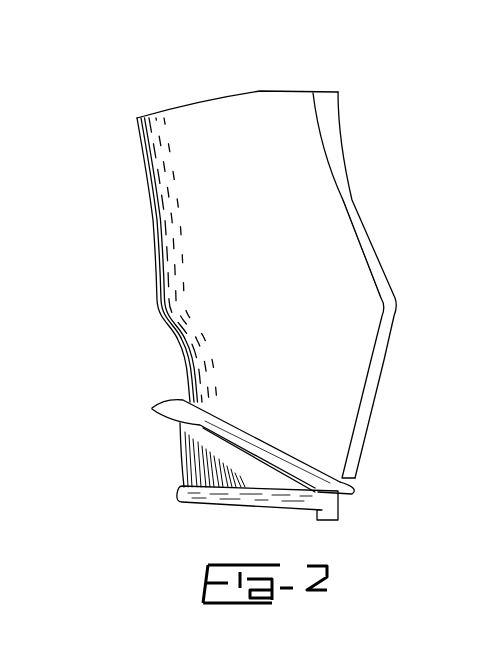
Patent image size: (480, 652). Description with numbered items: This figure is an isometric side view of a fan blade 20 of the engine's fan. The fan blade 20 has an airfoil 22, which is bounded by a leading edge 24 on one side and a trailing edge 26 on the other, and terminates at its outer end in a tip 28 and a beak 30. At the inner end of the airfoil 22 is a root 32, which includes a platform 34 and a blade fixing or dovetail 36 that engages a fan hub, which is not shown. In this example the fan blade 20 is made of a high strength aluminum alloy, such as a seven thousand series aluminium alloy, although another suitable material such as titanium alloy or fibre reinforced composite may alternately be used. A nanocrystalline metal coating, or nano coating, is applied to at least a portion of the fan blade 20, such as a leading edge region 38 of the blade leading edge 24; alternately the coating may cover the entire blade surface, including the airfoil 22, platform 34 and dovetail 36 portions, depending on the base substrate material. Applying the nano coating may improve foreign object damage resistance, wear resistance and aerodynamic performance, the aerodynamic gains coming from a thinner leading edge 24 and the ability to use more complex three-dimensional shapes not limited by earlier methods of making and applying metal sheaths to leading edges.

The fan blade 20 is at (262, 246).
The airfoil 22 is at (208, 285).
The leading edge 24 is at (390, 247).
The trailing edge 26 is at (162, 317).
The tip 28 is at (268, 80).
The beak 30 is at (342, 91).
The root 32 is at (183, 453).
The platform 34 is at (343, 478).
The dovetail 36 is at (173, 493).
The leading edge region 38 is at (343, 183).